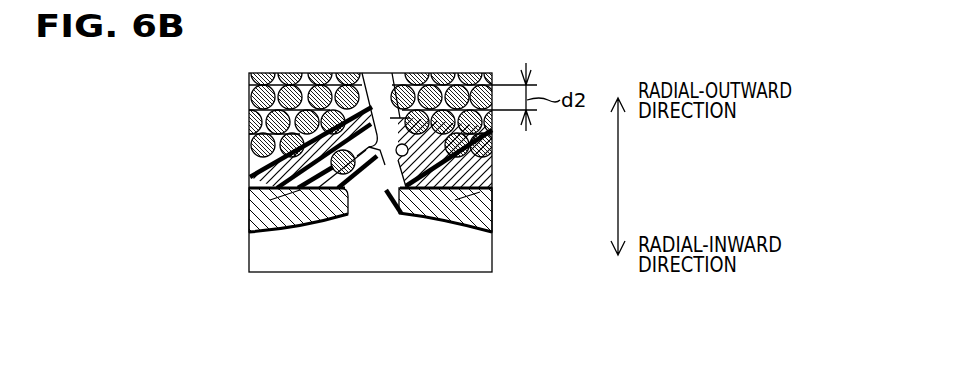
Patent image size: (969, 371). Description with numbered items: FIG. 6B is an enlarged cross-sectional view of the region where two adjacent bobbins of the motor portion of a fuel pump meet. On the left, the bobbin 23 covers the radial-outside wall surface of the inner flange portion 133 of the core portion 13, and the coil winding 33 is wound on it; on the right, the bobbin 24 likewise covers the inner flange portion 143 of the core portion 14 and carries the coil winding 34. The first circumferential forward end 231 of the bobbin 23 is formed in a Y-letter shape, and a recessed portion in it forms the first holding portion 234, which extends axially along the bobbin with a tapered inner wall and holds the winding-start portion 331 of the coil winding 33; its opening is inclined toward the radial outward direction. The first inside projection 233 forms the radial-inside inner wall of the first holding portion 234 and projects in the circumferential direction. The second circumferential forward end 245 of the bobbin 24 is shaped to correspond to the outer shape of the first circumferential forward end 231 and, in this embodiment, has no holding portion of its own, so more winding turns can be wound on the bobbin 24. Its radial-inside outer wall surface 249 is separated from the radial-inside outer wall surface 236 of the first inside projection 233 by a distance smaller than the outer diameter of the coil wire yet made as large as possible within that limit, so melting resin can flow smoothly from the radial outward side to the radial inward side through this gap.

The core portion 13 is at (236, 216).
The core portion 14 is at (505, 216).
The bobbin 23 is at (236, 184).
The bobbin 24 is at (505, 184).
The coil winding 33 is at (303, 73).
The coil winding 34 is at (455, 73).
The inner flange portion 133 is at (297, 213).
The inner flange portion 143 is at (467, 213).
The first circumferential forward end 231 is at (273, 197).
The first inside projection 233 is at (365, 202).
The first holding portion 234 is at (362, 73).
The radial-inside outer wall surface 236 is at (380, 200).
The second circumferential forward end 245 is at (450, 213).
The radial-inside outer wall surface 249 is at (410, 200).
The winding-start portion 331 is at (320, 205).